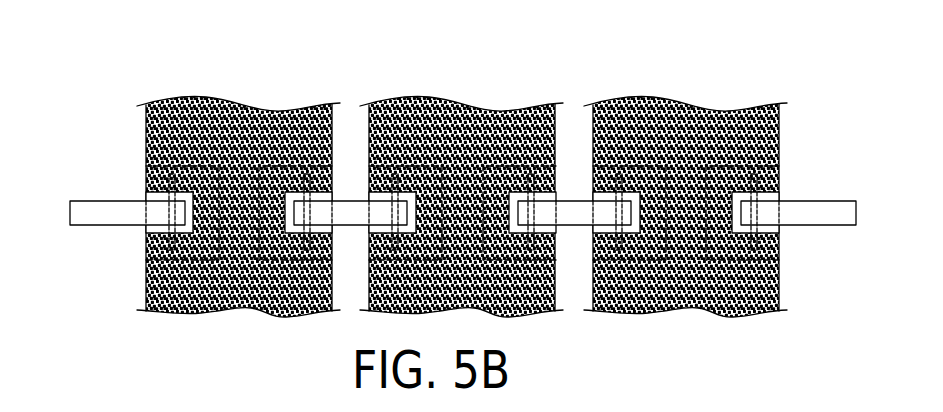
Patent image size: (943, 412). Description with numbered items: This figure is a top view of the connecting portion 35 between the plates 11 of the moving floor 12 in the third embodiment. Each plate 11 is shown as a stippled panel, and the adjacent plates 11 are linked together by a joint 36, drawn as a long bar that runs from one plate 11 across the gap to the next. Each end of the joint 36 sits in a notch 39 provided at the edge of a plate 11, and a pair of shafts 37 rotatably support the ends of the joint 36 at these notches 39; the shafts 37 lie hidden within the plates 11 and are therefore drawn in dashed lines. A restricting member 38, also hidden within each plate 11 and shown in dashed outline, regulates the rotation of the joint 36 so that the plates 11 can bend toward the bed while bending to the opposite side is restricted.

The plate 11 is at (146, 118).
The moving floor 12 is at (433, 176).
The connecting portion 35 is at (436, 209).
The joint 36 is at (127, 245).
The shaft 37 is at (147, 183).
The restricting member 38 is at (172, 157).
The notch 39 is at (157, 230).